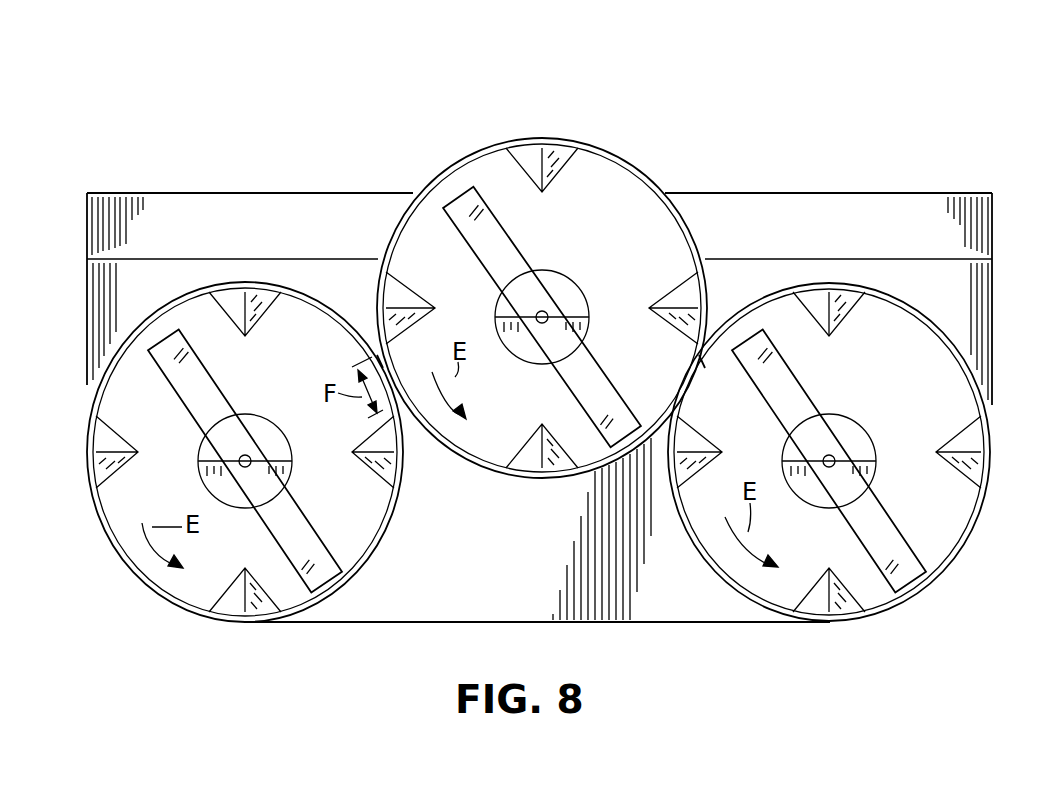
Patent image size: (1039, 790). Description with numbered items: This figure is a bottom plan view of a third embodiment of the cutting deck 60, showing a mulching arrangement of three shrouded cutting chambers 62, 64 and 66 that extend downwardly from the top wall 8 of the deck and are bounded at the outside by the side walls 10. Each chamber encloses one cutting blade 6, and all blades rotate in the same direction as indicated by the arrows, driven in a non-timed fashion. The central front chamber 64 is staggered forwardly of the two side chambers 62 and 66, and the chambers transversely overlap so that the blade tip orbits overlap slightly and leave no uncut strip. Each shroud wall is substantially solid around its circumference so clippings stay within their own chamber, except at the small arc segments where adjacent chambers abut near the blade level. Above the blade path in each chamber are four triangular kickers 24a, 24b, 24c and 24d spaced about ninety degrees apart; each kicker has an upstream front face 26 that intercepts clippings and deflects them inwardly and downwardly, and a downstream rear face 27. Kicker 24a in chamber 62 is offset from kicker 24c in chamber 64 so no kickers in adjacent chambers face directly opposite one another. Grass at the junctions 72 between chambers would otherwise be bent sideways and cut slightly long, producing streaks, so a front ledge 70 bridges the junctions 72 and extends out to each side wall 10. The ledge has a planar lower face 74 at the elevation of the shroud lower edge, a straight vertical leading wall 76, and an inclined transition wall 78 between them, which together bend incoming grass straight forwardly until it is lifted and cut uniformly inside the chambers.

The cutting blade 6 is at (210, 390).
The top wall 8 is at (515, 552).
The side wall 10 is at (88, 352).
The triangular kicker 24a is at (375, 478).
The triangular kicker 24b is at (562, 163).
The triangular kicker 24c is at (405, 293).
The triangular kicker 24d is at (527, 442).
The upstream front face 26 is at (858, 303).
The downstream rear face 27 is at (817, 303).
The cutting deck 60 is at (676, 128).
The shrouded cutting chamber 62 is at (158, 306).
The front cutting chamber 64 is at (470, 152).
The shrouded cutting chamber 66 is at (985, 440).
The front ledge 70 is at (279, 182).
The junction 72 is at (370, 360).
The planar lower face 74 is at (178, 283).
The straight vertical wall 76 is at (140, 193).
The inclined transition wall 78 is at (132, 235).